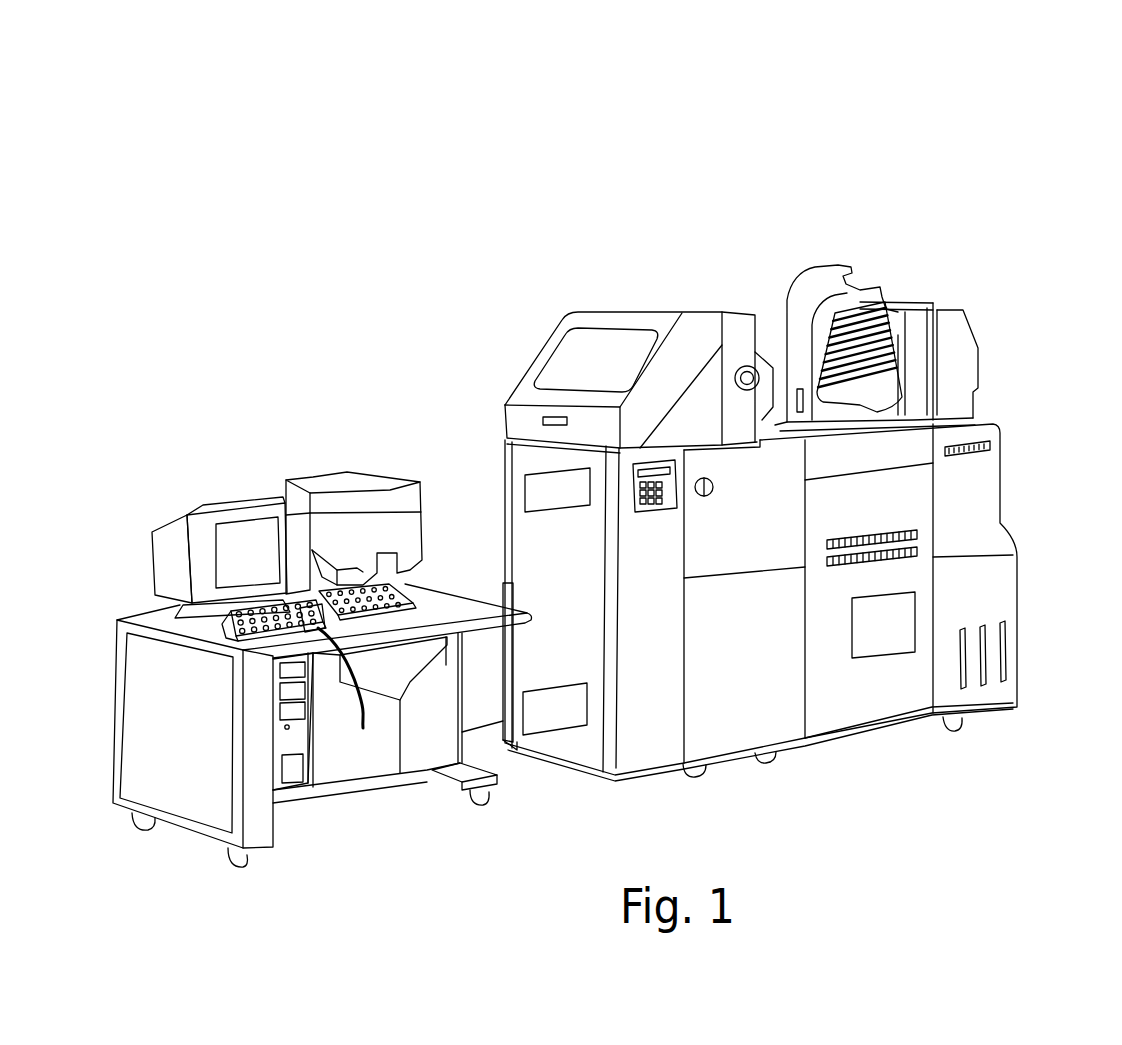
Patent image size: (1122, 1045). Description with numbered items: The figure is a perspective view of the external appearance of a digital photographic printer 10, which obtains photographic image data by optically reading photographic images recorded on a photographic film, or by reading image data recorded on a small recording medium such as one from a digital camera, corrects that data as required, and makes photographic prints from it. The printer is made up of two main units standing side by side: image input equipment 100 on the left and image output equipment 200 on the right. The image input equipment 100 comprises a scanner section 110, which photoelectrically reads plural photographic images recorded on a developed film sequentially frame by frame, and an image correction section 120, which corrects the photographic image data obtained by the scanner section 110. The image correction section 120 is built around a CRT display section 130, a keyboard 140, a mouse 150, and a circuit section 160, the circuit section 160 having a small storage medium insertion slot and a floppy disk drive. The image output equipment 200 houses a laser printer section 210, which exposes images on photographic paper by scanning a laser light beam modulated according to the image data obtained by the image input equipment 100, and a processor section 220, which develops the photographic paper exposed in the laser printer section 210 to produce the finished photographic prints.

The digital photographic printer 10 is at (562, 133).
The image input equipment 100 is at (332, 366).
The scanner section 110 is at (389, 463).
The image correction section 120 is at (214, 481).
The CRT display section 130 is at (168, 538).
The keyboard 140 is at (231, 626).
The mouse 150 is at (364, 718).
The circuit section 160 is at (281, 747).
The image output equipment 200 is at (896, 209).
The laser printer section 210 is at (680, 345).
The processor section 220 is at (916, 483).